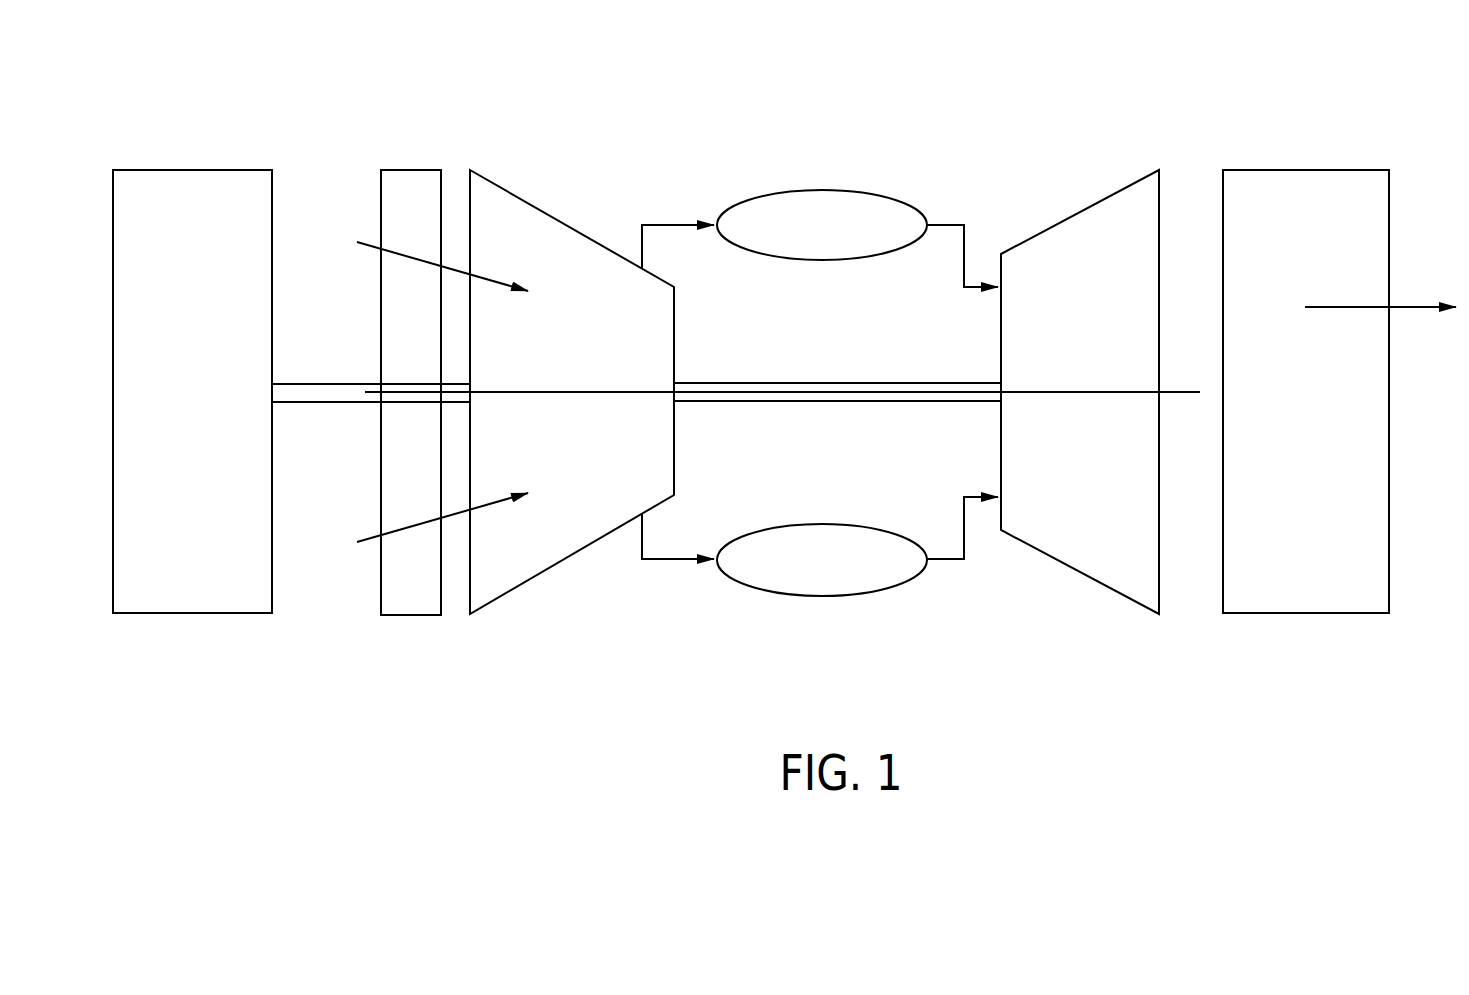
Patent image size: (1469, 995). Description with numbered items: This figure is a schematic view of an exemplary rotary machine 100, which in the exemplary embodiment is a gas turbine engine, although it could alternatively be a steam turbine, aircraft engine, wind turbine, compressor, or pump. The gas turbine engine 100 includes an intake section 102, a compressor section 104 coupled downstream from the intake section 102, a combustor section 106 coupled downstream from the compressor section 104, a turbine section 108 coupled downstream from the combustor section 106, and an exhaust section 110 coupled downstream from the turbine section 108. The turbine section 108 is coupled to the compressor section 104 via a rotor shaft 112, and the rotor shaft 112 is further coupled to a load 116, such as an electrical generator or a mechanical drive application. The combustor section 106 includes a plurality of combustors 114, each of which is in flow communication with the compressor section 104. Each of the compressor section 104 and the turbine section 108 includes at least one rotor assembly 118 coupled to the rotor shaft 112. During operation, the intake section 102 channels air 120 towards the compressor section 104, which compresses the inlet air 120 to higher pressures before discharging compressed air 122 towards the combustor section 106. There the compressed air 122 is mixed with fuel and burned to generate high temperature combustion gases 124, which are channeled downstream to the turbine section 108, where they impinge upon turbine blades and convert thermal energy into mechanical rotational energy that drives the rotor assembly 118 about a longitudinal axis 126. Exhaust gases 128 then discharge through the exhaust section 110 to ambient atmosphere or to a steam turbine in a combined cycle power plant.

The rotary machine 100 is at (986, 88).
The intake section 102 is at (410, 170).
The compressor section 104 is at (513, 195).
The combustor section 106 is at (864, 180).
The turbine section 108 is at (1108, 197).
The exhaust section 110 is at (1305, 170).
The rotor shaft 112 is at (823, 402).
The combustor 114 is at (847, 238).
The load 116 is at (192, 170).
The rotor assembly 118 is at (575, 208).
The air 120 is at (367, 237).
The compressed air 122 is at (672, 225).
The combustion gases 124 is at (945, 227).
The longitudinal axis 126 is at (1187, 392).
The exhaust gases 128 is at (1340, 307).